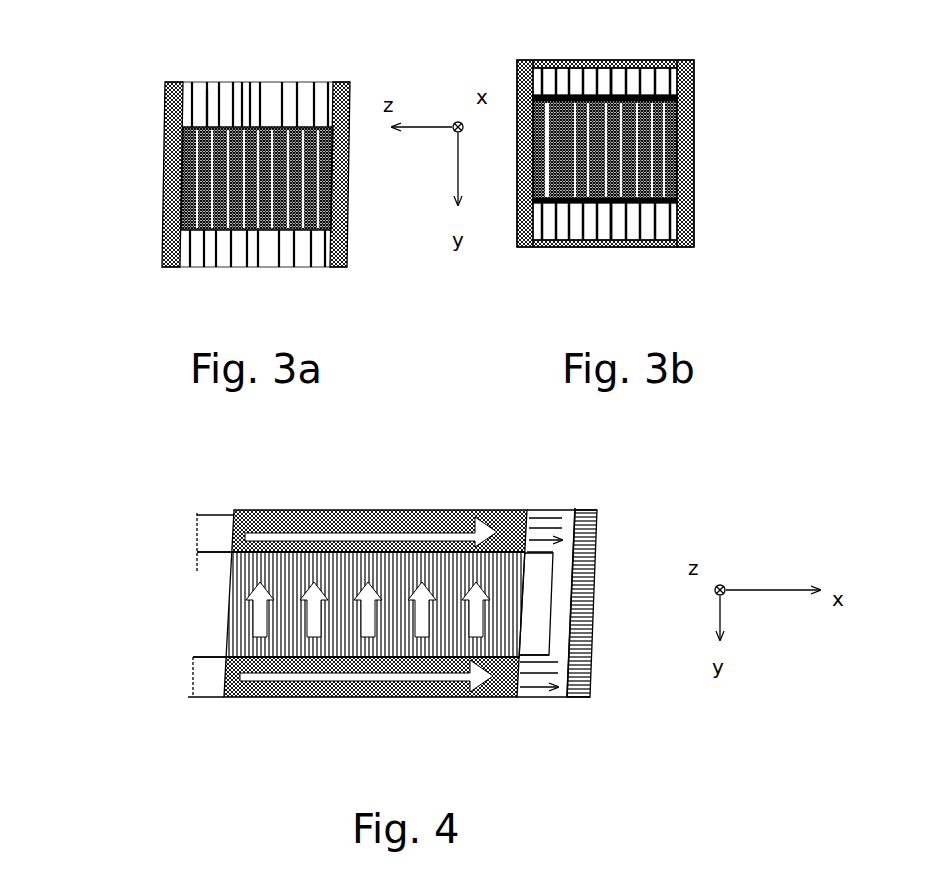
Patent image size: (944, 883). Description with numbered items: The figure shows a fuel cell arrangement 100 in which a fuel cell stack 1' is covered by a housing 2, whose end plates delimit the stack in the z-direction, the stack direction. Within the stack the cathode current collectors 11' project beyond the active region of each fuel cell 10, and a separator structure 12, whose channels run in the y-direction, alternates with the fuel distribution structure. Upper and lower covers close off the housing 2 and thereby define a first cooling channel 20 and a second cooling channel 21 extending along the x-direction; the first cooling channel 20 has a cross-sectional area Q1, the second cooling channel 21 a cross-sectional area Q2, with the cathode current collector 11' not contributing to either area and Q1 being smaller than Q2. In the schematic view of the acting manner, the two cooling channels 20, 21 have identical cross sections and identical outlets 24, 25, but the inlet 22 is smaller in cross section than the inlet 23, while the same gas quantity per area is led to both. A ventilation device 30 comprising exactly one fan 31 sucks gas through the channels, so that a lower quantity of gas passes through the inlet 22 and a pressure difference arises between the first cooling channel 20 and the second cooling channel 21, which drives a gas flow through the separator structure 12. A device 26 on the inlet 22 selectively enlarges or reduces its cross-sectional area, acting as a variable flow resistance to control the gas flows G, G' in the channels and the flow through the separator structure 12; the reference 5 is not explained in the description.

In FIG. 3A, the fuel cell stack 1' is at (237, 209).
In FIG. 3A, the housing 2 is at (167, 128).
In FIG. 3B, the housing 2 is at (517, 80).
In FIG. 3A, the fuel cell 10 is at (258, 86).
In FIG. 3A, the cathode current collector 11' is at (217, 74).
In FIG. 3A, the separator structure 12 is at (242, 86).
In FIG. 4, the separator structure 12 is at (238, 617).
In FIG. 3B, the cooling channel 20 is at (562, 72).
In FIG. 4, the cooling channel 20 is at (222, 518).
In FIG. 3B, the cooling channel 21 is at (556, 246).
In FIG. 4, the cooling channel 21 is at (205, 690).
In FIG. 4, the inlet 22 is at (188, 526).
In FIG. 4, the inlet 23 is at (190, 668).
In FIG. 4, the outlet 24 is at (537, 510).
In FIG. 4, the outlet 25 is at (527, 700).
In FIG. 4, the device for changing the cross-sectional area 26 is at (197, 549).
In FIG. 4, the ventilation device 30 is at (597, 555).
In FIG. 4, the fan 31 is at (580, 597).
In FIG. 4, the collector chamber 5 is at (470, 605).
In FIG. 3B, the fuel cell arrangement 100 is at (712, 148).
In FIG. 4, the gas flow G is at (371, 497).
In FIG. 4, the gas flow G' is at (366, 711).
In FIG. 3B, the cross-sectional area Q1 is at (617, 73).
In FIG. 3B, the cross-sectional area Q2 is at (610, 246).